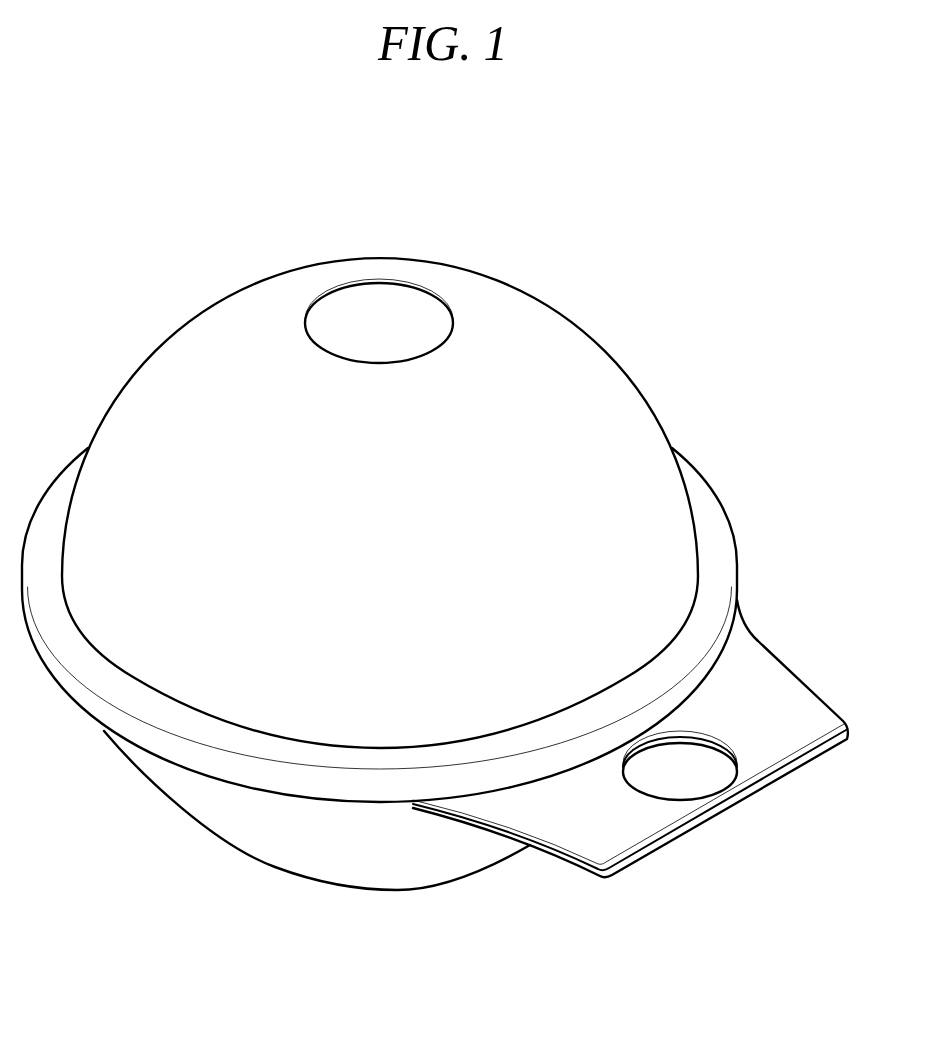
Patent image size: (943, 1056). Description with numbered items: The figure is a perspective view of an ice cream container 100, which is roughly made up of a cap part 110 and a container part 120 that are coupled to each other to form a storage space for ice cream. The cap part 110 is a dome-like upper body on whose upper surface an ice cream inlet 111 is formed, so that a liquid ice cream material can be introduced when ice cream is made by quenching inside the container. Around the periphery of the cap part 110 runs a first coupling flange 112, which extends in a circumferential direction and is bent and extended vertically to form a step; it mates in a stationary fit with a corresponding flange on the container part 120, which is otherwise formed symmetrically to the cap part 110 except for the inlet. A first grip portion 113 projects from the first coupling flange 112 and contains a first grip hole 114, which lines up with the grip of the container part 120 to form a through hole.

The ice cream container 100 is at (185, 130).
The cap part 110 is at (573, 328).
The ice cream inlet 111 is at (378, 322).
The first coupling flange 112 is at (708, 502).
The first grip portion 113 is at (777, 673).
The first grip hole 114 is at (700, 773).
The container part 120 is at (275, 866).